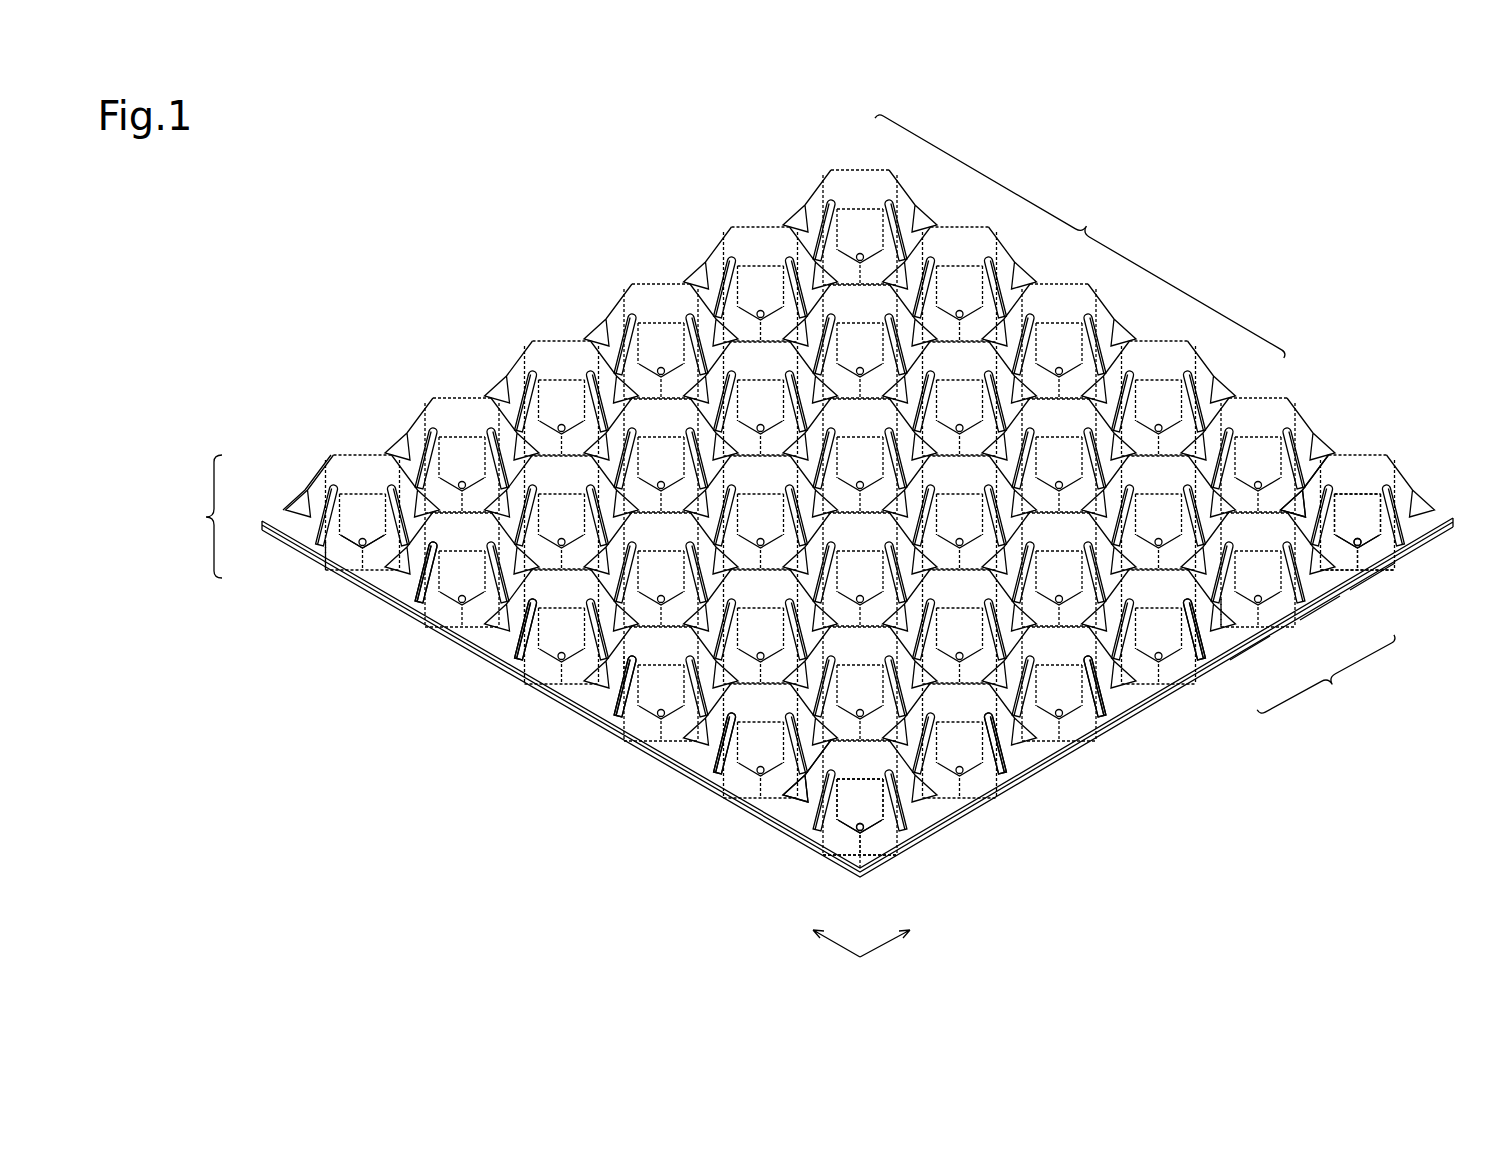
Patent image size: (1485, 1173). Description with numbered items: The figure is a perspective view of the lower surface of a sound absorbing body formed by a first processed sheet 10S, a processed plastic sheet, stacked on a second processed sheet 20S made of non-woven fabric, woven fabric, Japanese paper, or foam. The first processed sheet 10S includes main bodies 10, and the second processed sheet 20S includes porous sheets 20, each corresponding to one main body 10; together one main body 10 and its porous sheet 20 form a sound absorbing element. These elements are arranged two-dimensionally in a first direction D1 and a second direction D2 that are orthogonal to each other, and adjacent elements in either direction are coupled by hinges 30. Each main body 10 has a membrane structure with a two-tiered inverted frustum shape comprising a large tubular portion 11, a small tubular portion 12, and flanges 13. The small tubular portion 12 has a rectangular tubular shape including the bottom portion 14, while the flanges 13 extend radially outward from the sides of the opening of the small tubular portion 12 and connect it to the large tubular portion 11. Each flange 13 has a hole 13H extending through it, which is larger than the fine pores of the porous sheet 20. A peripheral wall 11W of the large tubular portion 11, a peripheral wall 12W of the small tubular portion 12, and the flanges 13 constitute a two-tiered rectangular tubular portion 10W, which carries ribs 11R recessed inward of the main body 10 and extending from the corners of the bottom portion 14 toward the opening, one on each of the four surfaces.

The main body 10 is at (863, 170).
The first processed sheet 10S is at (1083, 232).
The tubular portion 10W is at (190, 516).
The large tubular portion 11 is at (1440, 512).
The rib 11R is at (528, 686).
The peripheral wall of the large tubular portion 11W is at (298, 534).
The small tubular portion 12 is at (1398, 478).
The peripheral wall of the small tubular portion 12W is at (322, 468).
The flange 13 is at (297, 502).
The hole 13H is at (1362, 548).
The bottom portion 14 is at (1358, 463).
The porous sheet 20 is at (1238, 664).
The second processed sheet 20S is at (1329, 680).
The hinge 30 is at (362, 596).
The first direction D1 is at (901, 936).
The second direction D2 is at (818, 936).